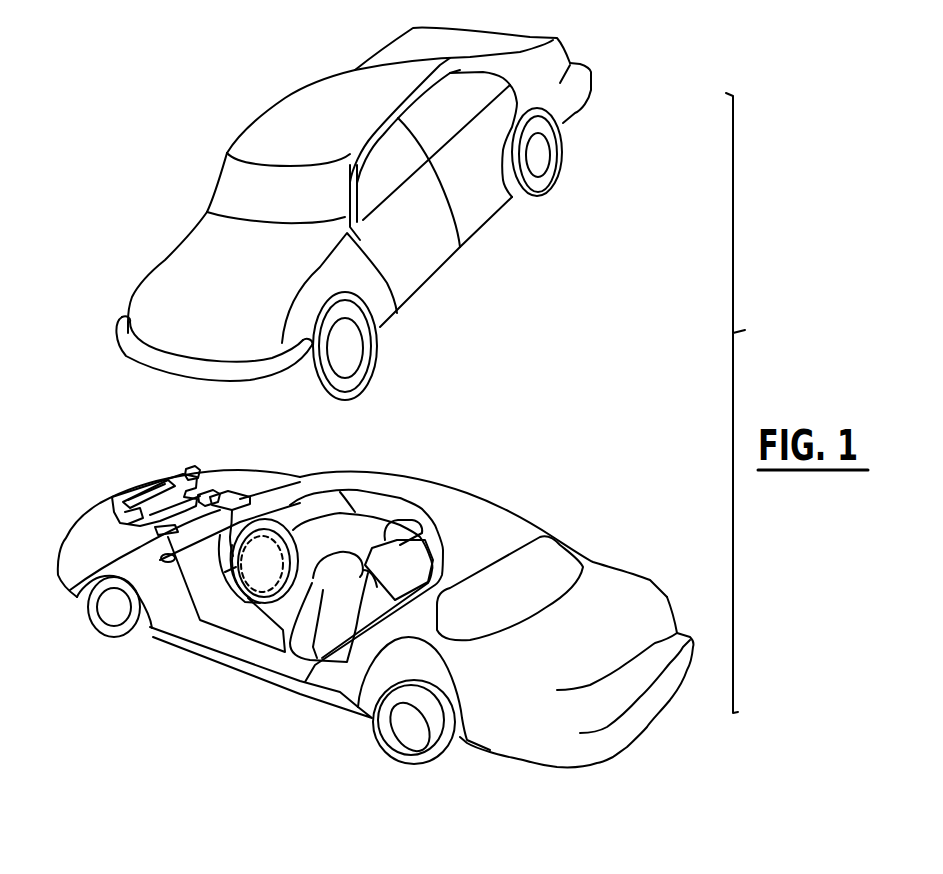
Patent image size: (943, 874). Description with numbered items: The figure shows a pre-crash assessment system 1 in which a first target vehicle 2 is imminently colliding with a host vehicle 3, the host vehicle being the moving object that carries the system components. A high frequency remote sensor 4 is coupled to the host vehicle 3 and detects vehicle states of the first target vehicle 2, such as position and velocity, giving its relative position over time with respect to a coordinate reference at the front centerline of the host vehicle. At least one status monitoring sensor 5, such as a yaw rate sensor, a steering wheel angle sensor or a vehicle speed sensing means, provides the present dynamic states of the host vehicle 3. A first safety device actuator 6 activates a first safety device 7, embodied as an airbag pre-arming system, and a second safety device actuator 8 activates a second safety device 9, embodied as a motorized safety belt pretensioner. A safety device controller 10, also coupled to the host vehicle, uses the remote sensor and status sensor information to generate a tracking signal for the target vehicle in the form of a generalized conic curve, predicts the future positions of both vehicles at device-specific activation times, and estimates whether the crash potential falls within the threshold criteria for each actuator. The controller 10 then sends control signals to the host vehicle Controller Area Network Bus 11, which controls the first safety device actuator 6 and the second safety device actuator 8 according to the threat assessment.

The pre-crash assessment system 1 is at (640, 62).
The first target vehicle 2 is at (557, 55).
The host vehicle 3 is at (310, 693).
The high frequency remote sensor 4 is at (123, 497).
The status monitoring sensor 5 is at (190, 468).
The first safety device actuator 6 is at (247, 498).
The first safety device 7 is at (252, 603).
The second safety device actuator 8 is at (70, 590).
The second safety device 9 is at (280, 633).
The safety device controller 10 is at (112, 481).
The Controller Area Network Bus 11 is at (207, 497).